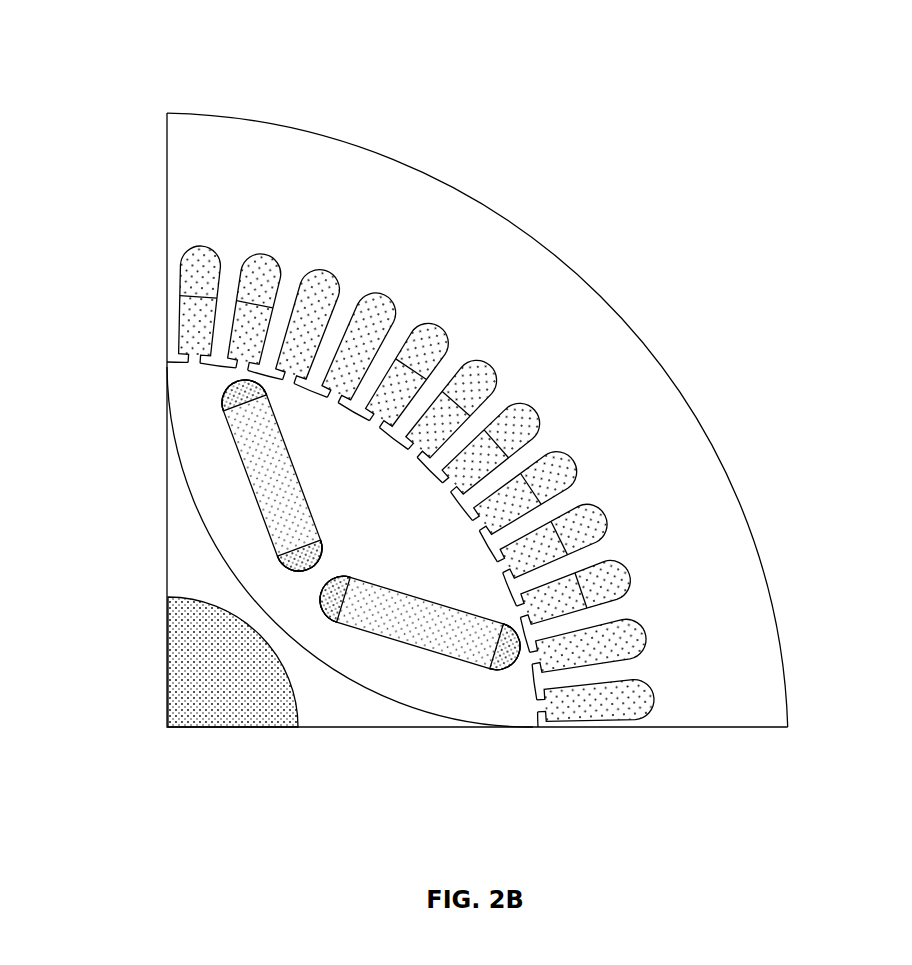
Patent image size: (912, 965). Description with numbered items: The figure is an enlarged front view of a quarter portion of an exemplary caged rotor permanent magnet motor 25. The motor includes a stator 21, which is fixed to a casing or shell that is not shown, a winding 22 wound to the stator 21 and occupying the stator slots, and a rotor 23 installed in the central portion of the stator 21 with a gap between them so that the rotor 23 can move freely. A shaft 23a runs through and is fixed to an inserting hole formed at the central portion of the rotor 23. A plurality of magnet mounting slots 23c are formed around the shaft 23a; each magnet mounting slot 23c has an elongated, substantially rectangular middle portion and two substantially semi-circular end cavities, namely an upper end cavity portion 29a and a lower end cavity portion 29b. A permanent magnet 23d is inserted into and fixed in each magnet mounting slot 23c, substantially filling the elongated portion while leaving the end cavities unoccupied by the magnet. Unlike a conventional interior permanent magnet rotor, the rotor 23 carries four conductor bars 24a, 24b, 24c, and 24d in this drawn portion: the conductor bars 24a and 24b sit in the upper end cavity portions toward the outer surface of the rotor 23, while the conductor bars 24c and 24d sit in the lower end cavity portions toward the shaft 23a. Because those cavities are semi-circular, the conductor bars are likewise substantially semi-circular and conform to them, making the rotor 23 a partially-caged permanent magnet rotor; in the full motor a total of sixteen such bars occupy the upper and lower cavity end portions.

The caged rotor permanent magnet motor 25 is at (216, 52).
The stator 21 is at (550, 246).
The winding 22 is at (513, 428).
The rotor 23 is at (402, 694).
The shaft 23a is at (232, 718).
The magnet mounting slot 23c is at (270, 452).
The permanent magnet 23d is at (290, 515).
The conductor bar 24a is at (228, 400).
The conductor bar 24b is at (497, 664).
The conductor bar 24c is at (280, 563).
The conductor bar 24d is at (336, 622).
The upper end cavity portion 29a is at (232, 388).
The lower end cavity portion 29b is at (292, 578).